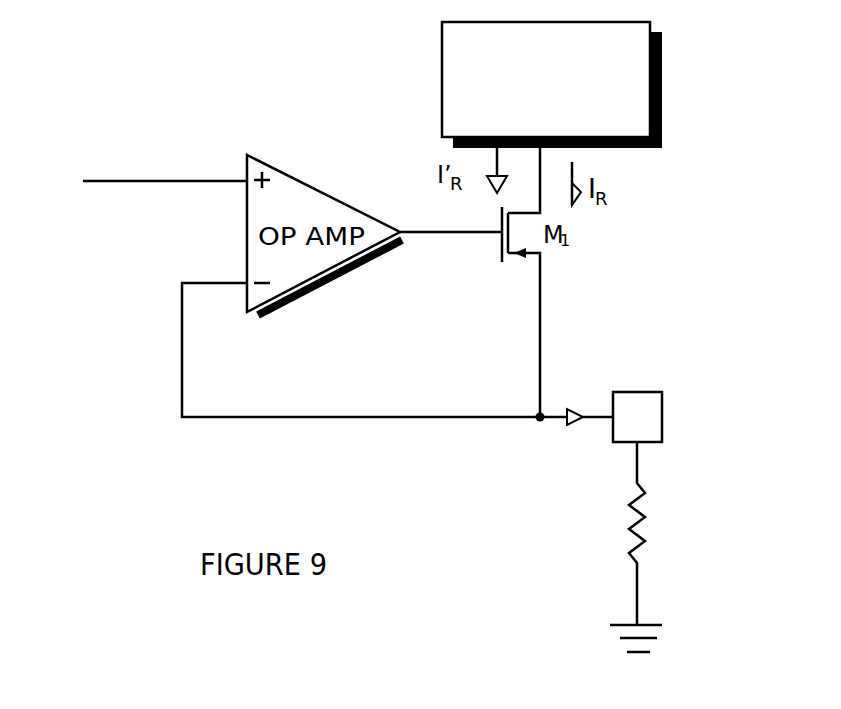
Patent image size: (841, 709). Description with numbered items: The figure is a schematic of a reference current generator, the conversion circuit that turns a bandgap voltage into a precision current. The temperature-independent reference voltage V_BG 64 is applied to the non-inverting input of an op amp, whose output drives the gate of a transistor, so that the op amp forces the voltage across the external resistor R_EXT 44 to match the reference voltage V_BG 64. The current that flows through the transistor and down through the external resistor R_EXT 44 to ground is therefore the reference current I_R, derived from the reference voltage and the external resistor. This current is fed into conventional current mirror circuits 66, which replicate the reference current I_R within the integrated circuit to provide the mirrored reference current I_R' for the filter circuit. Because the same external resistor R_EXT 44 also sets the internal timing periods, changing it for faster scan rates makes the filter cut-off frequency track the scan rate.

The reference voltage V_BG 64 is at (137, 181).
The current mirror circuits 66 is at (662, 62).
The external resistor R_EXT 44 is at (627, 518).